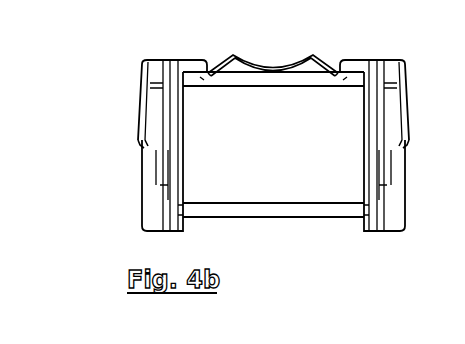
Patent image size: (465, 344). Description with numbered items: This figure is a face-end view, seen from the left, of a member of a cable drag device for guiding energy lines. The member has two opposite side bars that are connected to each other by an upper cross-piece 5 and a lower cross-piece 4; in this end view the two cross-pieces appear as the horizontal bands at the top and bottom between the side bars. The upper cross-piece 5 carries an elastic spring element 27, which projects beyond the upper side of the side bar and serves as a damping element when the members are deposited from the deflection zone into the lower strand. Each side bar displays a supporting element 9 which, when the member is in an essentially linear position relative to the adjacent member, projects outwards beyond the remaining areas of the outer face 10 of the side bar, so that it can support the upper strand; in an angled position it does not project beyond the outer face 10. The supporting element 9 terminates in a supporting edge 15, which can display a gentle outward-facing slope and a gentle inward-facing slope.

The lower cross-piece 4 is at (273, 210).
The upper cross-piece 5 is at (266, 74).
The spring element 27 is at (263, 65).
The supporting element 9 is at (142, 113).
The supporting edge 15 is at (134, 141).
The outer face 10 is at (162, 168).